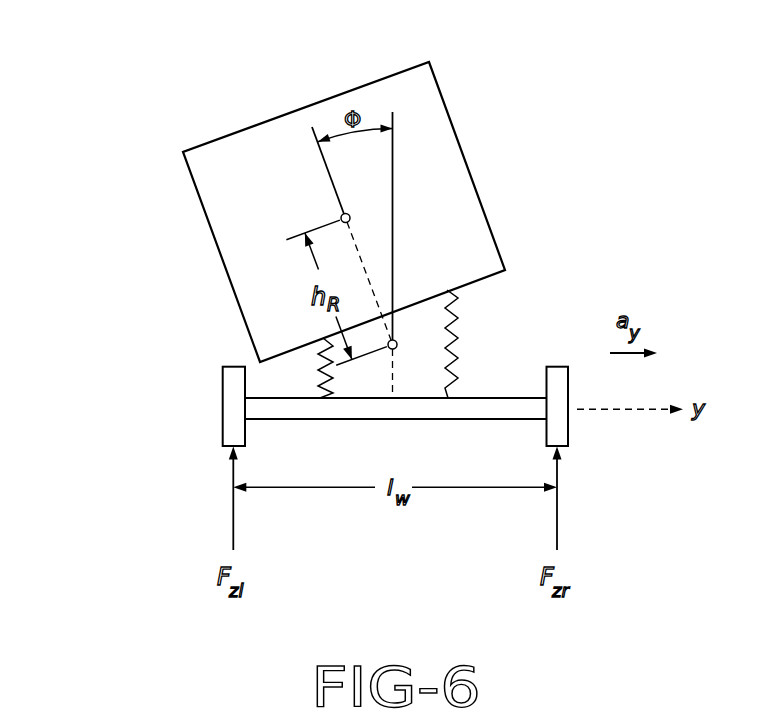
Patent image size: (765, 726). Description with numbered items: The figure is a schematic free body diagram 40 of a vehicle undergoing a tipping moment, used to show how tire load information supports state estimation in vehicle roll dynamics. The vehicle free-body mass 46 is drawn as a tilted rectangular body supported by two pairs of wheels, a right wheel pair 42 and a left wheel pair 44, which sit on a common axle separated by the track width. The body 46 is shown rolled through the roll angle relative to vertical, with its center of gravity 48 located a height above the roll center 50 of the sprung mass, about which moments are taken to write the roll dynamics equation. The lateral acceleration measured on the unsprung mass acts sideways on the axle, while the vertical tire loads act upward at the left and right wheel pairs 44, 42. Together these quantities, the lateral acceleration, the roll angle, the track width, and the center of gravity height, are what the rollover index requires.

The free body diagram 40 is at (97, 527).
The right wheel pair 42 is at (557, 428).
The left wheel pair 44 is at (232, 412).
The vehicle free-body mass 46 is at (478, 149).
The center of gravity 48 is at (341, 215).
The roll center 50 is at (398, 344).